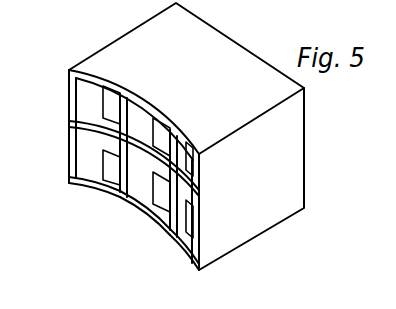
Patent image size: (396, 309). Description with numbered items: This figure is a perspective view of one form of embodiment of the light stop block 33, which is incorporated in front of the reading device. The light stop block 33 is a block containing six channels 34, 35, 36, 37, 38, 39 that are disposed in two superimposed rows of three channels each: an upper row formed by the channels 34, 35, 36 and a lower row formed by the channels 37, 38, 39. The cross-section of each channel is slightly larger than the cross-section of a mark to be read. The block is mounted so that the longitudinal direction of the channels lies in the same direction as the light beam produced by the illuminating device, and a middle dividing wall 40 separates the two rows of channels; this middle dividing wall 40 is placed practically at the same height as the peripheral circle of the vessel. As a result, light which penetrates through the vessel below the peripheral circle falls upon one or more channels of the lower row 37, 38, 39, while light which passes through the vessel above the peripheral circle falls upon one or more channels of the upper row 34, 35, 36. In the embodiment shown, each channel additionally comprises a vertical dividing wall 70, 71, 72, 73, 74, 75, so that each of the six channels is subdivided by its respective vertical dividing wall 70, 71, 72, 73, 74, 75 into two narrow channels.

The light stop block 33 is at (115, 31).
The channel 34 is at (80, 89).
The channel 35 is at (138, 103).
The channel 36 is at (178, 130).
The channel 37 is at (97, 178).
The channel 38 is at (149, 198).
The channel 39 is at (182, 238).
The middle dividing wall 40 is at (80, 127).
The vertical dividing wall 70 is at (110, 114).
The vertical dividing wall 71 is at (160, 125).
The vertical dividing wall 72 is at (193, 169).
The vertical dividing wall 73 is at (112, 166).
The vertical dividing wall 74 is at (160, 181).
The vertical dividing wall 75 is at (193, 216).